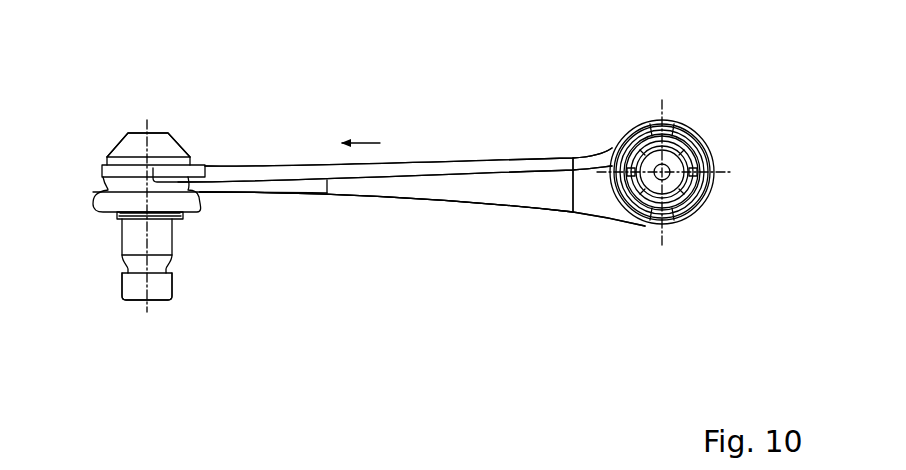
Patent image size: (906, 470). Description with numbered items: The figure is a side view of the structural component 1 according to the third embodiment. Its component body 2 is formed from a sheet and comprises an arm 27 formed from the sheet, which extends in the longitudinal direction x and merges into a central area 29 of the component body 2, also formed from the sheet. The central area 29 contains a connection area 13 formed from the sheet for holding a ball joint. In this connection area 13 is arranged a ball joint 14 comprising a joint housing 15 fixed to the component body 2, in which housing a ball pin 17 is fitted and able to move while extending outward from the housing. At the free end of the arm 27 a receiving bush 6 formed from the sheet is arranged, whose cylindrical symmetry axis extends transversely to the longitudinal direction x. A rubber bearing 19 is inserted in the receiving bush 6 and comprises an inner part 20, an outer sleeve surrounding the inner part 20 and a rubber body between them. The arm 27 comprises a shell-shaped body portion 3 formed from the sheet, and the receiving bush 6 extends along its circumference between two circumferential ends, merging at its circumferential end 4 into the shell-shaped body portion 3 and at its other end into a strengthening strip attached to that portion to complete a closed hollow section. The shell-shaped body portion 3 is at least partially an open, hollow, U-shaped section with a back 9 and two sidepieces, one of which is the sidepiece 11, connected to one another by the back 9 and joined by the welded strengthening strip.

The structural component 1 is at (298, 105).
The longitudinal direction x is at (366, 143).
The component body 2 is at (377, 198).
The shell-shaped body portion 3 is at (558, 153).
The circumferential end 4 is at (617, 152).
The receiving bush 6 is at (686, 222).
The back 9 is at (526, 160).
The sidepiece 11 is at (511, 188).
The connection area 13 is at (170, 193).
The ball joint 14 is at (115, 235).
The joint housing 15 is at (127, 148).
The ball pin 17 is at (176, 295).
The rubber bearing 19 is at (708, 207).
The inner part 20 is at (683, 128).
The arm 27 is at (578, 222).
The central area 29 is at (247, 200).